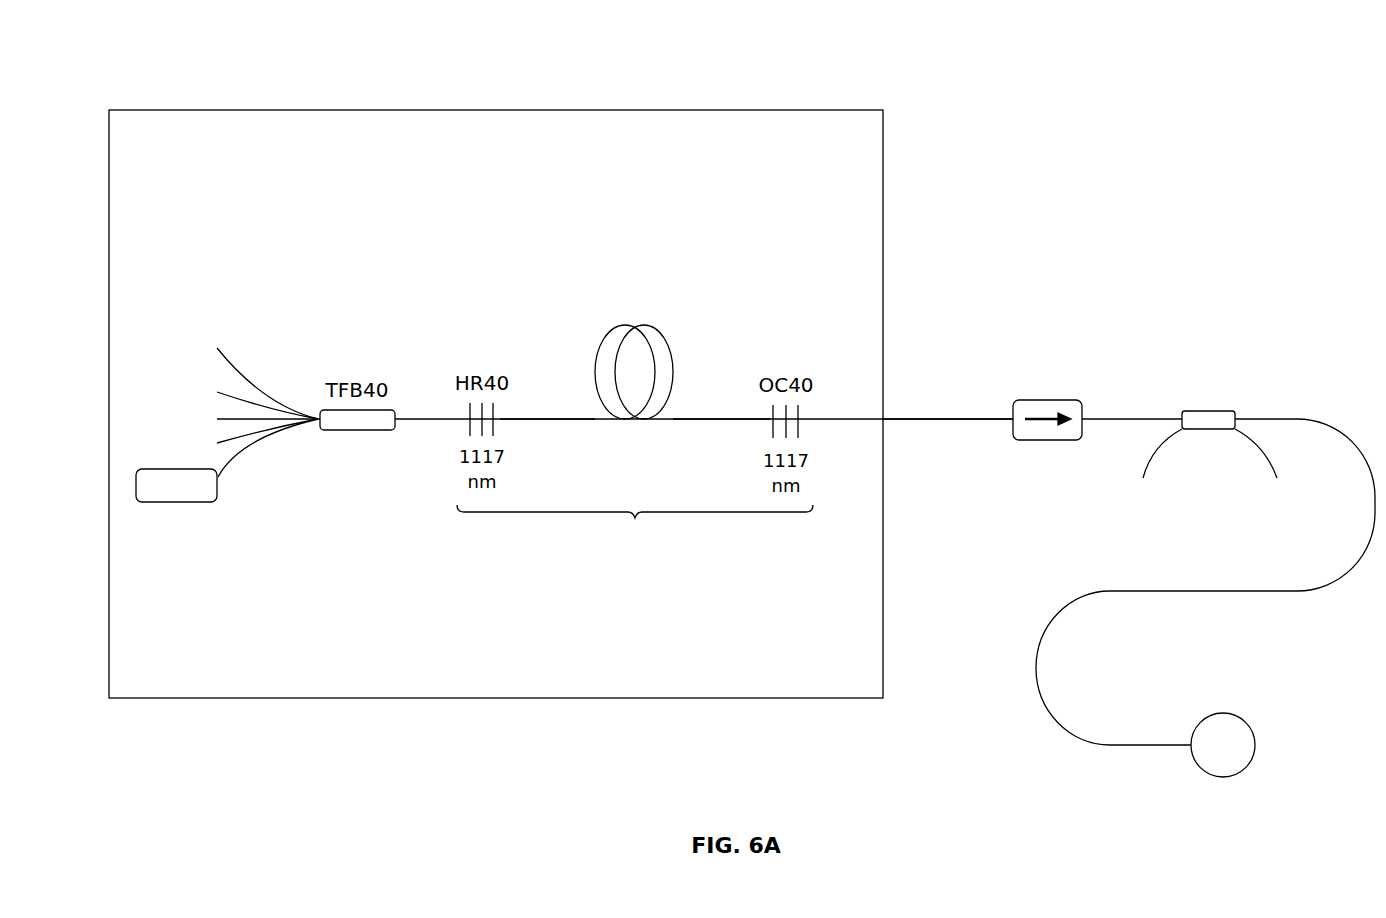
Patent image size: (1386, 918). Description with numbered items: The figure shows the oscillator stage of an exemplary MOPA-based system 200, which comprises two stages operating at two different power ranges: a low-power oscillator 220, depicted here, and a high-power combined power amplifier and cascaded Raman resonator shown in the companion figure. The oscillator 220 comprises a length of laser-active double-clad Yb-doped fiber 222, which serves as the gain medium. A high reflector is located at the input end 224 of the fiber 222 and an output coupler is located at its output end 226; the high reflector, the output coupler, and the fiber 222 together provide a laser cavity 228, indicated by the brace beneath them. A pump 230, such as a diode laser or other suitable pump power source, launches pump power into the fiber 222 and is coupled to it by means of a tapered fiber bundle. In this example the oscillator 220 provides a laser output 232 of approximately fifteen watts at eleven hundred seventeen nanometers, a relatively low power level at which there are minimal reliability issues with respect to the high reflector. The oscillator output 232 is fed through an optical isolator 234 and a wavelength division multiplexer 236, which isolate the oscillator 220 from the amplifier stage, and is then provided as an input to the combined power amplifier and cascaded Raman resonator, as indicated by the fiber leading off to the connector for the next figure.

The MOPA-based system 200 is at (714, 51).
The oscillator 220 is at (582, 138).
The double-clad Yb-doped fiber 222 is at (746, 315).
The input end 224 is at (553, 415).
The output end 226 is at (678, 415).
The laser cavity 228 is at (729, 578).
The pump 230 is at (157, 461).
The laser output 232 is at (901, 408).
The optical isolator 234 is at (1025, 391).
The wavelength division multiplexer 236 is at (1188, 400).